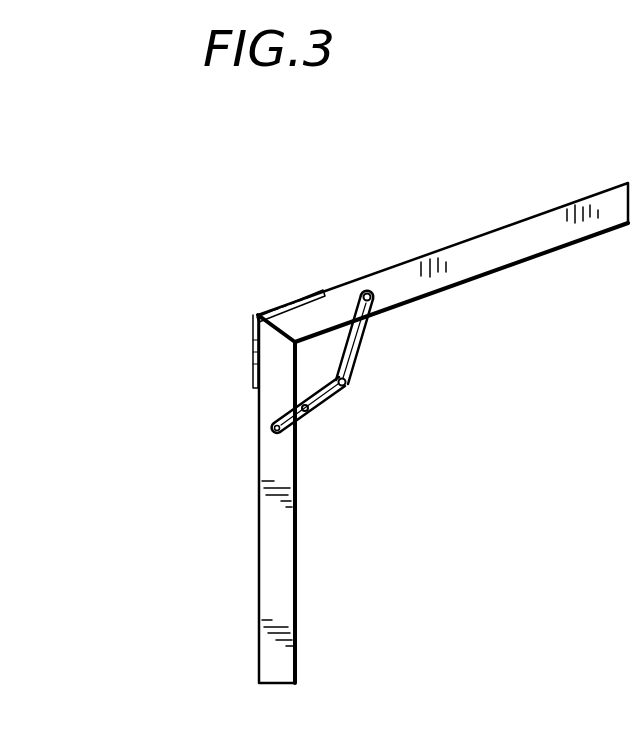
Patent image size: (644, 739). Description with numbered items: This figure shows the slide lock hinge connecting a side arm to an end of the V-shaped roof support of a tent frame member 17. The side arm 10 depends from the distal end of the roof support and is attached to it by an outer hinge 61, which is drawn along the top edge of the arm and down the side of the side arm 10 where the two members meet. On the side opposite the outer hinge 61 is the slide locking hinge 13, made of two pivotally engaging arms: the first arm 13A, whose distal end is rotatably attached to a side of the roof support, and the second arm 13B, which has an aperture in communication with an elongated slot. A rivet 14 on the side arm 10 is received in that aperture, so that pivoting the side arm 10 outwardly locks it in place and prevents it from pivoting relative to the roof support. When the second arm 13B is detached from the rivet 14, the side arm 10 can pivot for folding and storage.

The side arm 10 is at (277, 604).
The frame member 17 is at (543, 227).
The outer hinge 61 is at (292, 298).
The slide locking hinge 13 is at (399, 404).
The pivotally engaging arm 13A is at (358, 353).
The second arm 13B is at (303, 420).
The rivet 14 is at (310, 417).